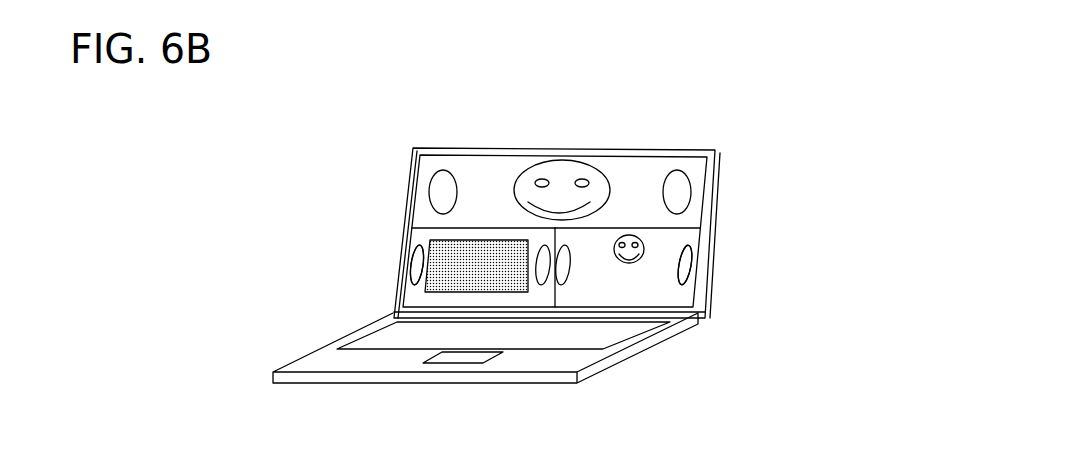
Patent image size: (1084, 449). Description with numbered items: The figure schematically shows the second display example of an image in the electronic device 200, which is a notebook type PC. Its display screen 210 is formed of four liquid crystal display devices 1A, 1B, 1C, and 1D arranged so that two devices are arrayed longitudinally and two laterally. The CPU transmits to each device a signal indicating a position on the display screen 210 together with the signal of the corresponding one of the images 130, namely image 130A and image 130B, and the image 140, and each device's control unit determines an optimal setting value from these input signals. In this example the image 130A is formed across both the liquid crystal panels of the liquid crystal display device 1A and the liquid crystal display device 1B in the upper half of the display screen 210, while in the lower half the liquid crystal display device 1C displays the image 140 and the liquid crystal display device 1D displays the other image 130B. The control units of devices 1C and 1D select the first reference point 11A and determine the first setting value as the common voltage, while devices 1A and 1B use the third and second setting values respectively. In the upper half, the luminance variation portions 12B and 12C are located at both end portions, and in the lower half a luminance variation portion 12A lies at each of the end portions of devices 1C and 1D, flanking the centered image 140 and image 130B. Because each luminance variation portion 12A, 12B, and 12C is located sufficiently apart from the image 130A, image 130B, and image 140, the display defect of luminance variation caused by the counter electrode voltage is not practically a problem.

The electronic device 200 is at (737, 86).
The display screen 210 is at (692, 151).
The liquid crystal display device 1A is at (465, 155).
The liquid crystal display device 1B is at (655, 155).
The liquid crystal display device 1C is at (410, 264).
The liquid crystal display device 1D is at (692, 270).
The luminance variation portion 12A is at (412, 287).
The luminance variation portion 12B is at (691, 180).
The luminance variation portion 12C is at (430, 186).
The images 130 is at (638, 48).
The image 130A is at (537, 160).
The image 130B is at (630, 235).
The image 140 is at (433, 240).
The first reference point 11A is at (543, 285).